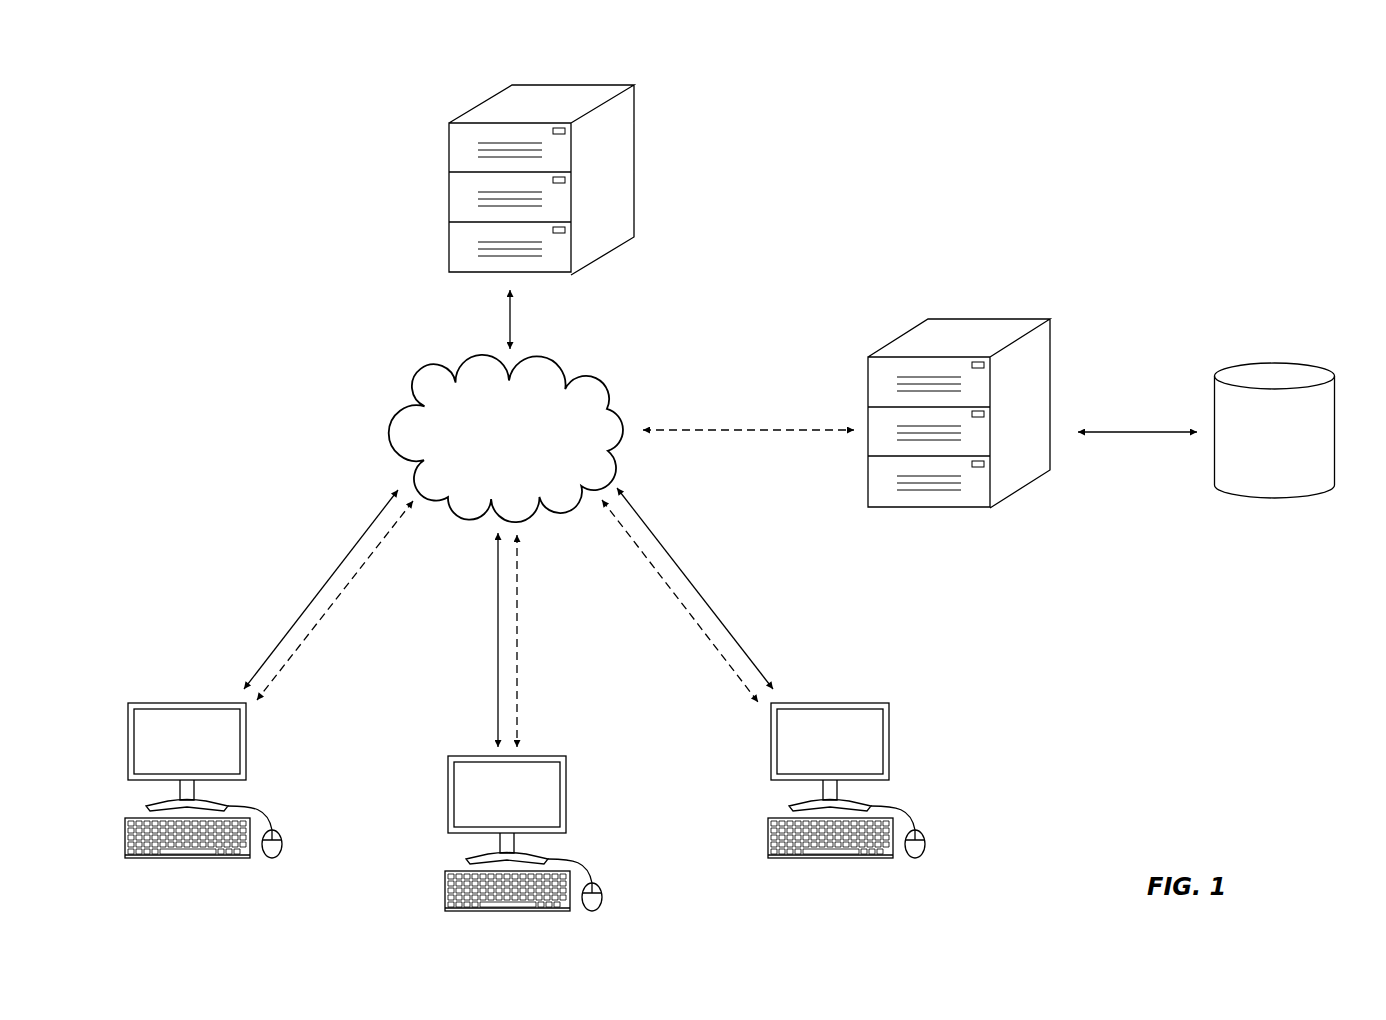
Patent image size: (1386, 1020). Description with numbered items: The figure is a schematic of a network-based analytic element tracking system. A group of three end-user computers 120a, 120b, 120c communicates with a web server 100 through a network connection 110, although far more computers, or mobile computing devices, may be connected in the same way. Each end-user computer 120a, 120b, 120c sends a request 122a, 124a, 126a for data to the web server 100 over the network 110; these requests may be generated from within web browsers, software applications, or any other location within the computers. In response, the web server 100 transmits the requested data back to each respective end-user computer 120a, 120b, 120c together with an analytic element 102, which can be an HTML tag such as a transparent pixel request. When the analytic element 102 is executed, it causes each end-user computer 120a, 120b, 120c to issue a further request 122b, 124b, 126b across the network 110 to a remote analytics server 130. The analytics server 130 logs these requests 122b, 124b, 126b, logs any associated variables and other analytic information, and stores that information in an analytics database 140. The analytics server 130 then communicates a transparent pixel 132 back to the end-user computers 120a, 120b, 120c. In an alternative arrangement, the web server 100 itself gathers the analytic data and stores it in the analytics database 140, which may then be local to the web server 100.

The web server 100 is at (551, 97).
The analytic element 102 is at (550, 326).
The network connection 110 is at (494, 461).
The end-user computer 120a is at (168, 858).
The end-user computer 120b is at (448, 815).
The end-user computer 120c is at (853, 858).
The request 122a is at (199, 646).
The request 122b is at (312, 695).
The request 124a is at (427, 706).
The request 124b is at (546, 706).
The request 126a is at (652, 695).
The request 126b is at (774, 646).
The analytics server 130 is at (976, 330).
The transparent pixel 132 is at (775, 397).
The analytics database 140 is at (1303, 375).